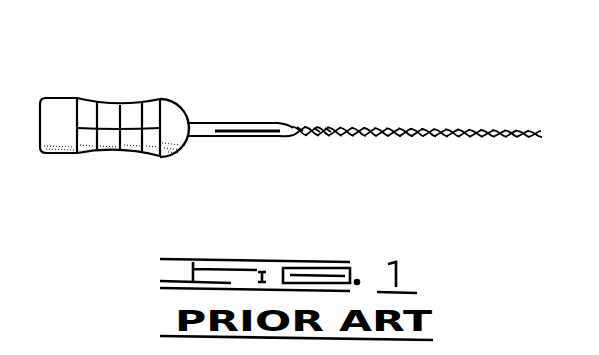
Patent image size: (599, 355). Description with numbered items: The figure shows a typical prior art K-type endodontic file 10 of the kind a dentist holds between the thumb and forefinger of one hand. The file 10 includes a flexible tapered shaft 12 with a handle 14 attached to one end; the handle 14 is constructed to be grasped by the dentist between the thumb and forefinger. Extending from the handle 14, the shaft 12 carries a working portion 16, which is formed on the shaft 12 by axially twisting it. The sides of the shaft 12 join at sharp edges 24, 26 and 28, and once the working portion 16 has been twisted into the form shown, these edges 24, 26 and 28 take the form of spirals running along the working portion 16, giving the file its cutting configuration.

The K-type endodontic file 10 is at (291, 119).
The flexible tapered shaft 12 is at (231, 125).
The handle 14 is at (168, 112).
The working portion 16 is at (534, 142).
The sharp edge 24 is at (300, 128).
The sharp edge 26 is at (317, 130).
The sharp edge 28 is at (328, 130).